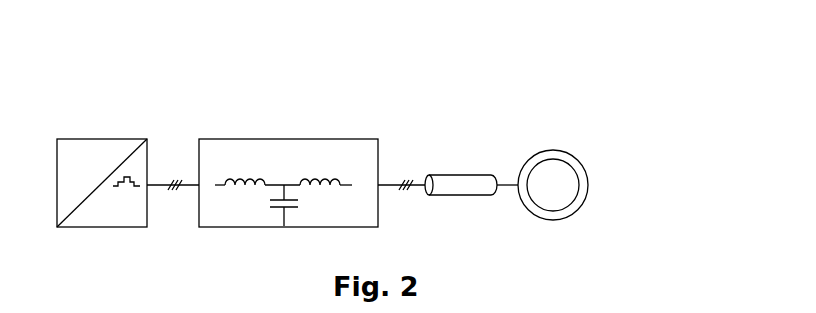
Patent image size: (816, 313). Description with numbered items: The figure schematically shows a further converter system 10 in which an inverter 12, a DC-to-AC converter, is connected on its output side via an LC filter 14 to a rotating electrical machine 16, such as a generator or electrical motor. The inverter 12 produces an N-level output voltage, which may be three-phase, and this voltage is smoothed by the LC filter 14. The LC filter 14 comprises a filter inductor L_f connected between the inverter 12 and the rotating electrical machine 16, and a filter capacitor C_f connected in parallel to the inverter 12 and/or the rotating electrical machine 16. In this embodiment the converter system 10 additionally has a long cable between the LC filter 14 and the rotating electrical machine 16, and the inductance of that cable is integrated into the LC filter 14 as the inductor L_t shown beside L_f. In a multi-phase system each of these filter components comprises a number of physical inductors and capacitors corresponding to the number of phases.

The converter system 10 is at (632, 97).
The inverter 12 is at (110, 139).
The LC filter 14 is at (295, 139).
The rotating electrical machine 16 is at (552, 150).